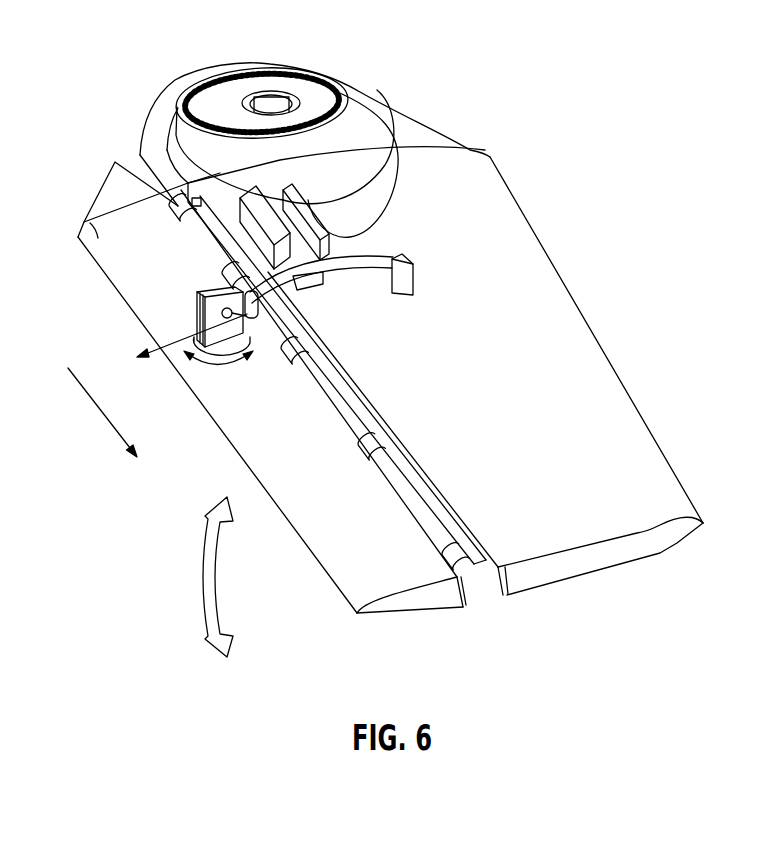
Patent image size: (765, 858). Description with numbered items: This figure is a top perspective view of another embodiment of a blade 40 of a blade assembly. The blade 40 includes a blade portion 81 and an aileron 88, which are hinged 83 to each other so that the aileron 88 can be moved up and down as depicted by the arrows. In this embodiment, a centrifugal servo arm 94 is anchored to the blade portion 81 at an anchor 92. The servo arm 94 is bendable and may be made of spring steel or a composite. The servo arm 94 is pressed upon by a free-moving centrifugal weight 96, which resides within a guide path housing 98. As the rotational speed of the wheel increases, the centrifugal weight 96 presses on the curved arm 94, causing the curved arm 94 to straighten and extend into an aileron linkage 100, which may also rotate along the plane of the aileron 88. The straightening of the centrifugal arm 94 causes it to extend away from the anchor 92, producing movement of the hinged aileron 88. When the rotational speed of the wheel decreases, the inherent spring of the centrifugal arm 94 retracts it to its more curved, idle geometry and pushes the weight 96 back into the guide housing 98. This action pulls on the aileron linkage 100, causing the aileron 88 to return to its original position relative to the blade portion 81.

The blade 40 is at (517, 613).
The blade portion 81 is at (637, 447).
The hinge 83 is at (465, 565).
The aileron 88 is at (84, 222).
The anchor 92 is at (413, 280).
The centrifugal servo arm 94 is at (370, 254).
The centrifugal weight 96 is at (307, 240).
The guide path housing 98 is at (297, 257).
The aileron linkage 100 is at (313, 360).